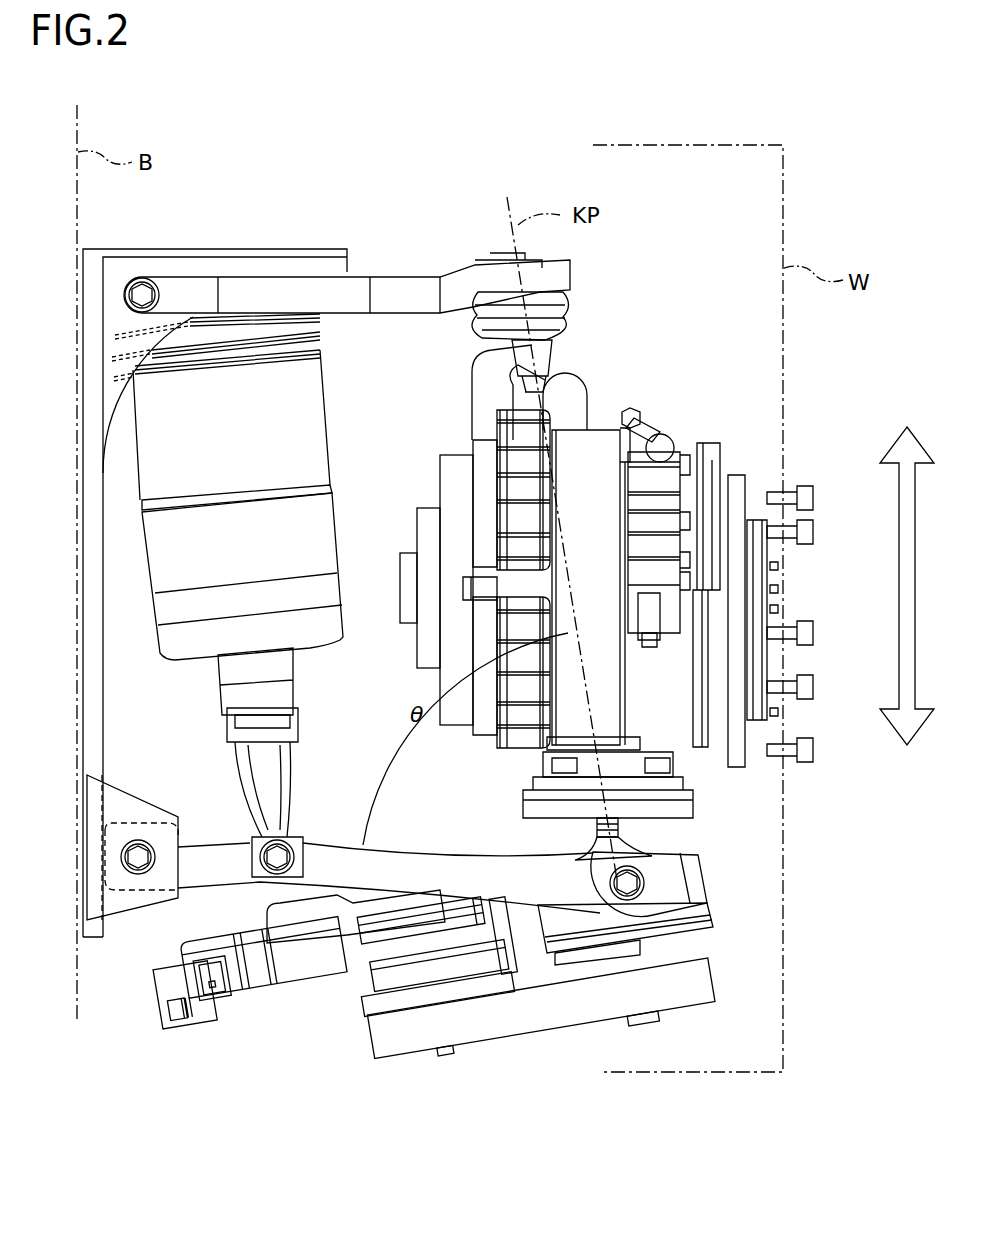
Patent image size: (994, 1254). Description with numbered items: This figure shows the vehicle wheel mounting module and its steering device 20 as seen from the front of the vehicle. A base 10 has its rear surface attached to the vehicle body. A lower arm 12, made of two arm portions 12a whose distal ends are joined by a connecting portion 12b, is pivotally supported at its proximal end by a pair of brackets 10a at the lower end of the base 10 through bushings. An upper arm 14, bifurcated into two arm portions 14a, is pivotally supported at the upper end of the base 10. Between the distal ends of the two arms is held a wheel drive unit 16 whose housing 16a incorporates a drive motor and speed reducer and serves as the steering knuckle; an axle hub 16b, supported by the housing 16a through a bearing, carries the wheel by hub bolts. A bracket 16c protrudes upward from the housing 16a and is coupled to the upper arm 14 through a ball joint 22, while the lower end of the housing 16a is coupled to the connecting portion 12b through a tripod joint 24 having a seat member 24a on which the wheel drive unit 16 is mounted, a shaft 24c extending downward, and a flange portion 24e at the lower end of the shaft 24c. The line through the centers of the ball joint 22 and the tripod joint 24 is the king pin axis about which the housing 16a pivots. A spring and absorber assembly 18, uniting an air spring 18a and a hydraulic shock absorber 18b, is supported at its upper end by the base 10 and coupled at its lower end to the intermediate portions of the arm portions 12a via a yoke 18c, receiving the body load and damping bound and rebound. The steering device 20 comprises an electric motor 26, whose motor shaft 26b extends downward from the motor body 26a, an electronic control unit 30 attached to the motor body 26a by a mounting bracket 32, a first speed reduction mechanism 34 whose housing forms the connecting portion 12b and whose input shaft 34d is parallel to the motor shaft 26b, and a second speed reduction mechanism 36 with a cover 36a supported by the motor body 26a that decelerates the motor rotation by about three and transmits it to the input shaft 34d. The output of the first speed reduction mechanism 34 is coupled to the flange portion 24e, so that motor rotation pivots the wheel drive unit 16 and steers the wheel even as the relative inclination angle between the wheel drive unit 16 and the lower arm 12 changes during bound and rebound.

The base 10 is at (68, 574).
The brackets 10a is at (118, 905).
The lower arm 12 is at (347, 806).
The arm portions 12a is at (425, 852).
The connecting portion 12b is at (690, 878).
The upper arm 14 is at (380, 262).
The arm portions 14a is at (352, 300).
The wheel drive unit 16 is at (688, 366).
The housing 16a is at (592, 450).
The axle hub 16b is at (777, 556).
The bracket 16c is at (487, 392).
The spring and absorber assembly 18 is at (354, 486).
The air spring 18a is at (318, 628).
The hydraulic shock absorber 18b is at (230, 683).
The yoke 18c is at (262, 776).
The steering device 20 is at (339, 998).
The ball joint 22 is at (578, 316).
The tripod joint 24 is at (640, 807).
The seat member 24a is at (530, 800).
The shaft 24c is at (596, 829).
The flange portion 24e is at (682, 842).
The electric motor 26 is at (340, 1013).
The motor body 26a is at (370, 1010).
The motor shaft 26b is at (446, 1058).
The electronic control unit 30 is at (236, 1000).
The mounting bracket 32 is at (282, 910).
The first speed reduction mechanism 34 is at (728, 932).
The input shaft 34d is at (650, 1020).
The second speed reduction mechanism 36 is at (549, 1056).
The cover 36a is at (595, 1010).